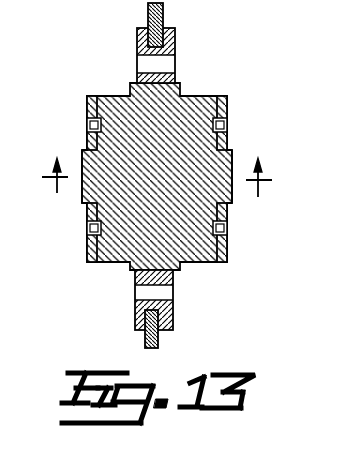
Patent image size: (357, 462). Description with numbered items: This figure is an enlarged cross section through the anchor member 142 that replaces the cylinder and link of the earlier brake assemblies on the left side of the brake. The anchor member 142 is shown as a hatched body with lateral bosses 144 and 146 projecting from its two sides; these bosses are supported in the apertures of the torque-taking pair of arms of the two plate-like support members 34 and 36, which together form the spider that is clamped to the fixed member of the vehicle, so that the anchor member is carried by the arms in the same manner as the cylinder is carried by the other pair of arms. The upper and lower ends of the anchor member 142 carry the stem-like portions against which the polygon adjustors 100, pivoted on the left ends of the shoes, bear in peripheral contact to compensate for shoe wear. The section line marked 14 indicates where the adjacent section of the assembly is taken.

The adjusting means 100 is at (166, 50).
The anchor member 142 is at (113, 106).
The section line 14 is at (160, 166).
The lateral boss 146 is at (84, 184).
The lateral boss 144 is at (230, 198).
The plate-like member 36 is at (87, 240).
The plate-like member 34 is at (227, 247).